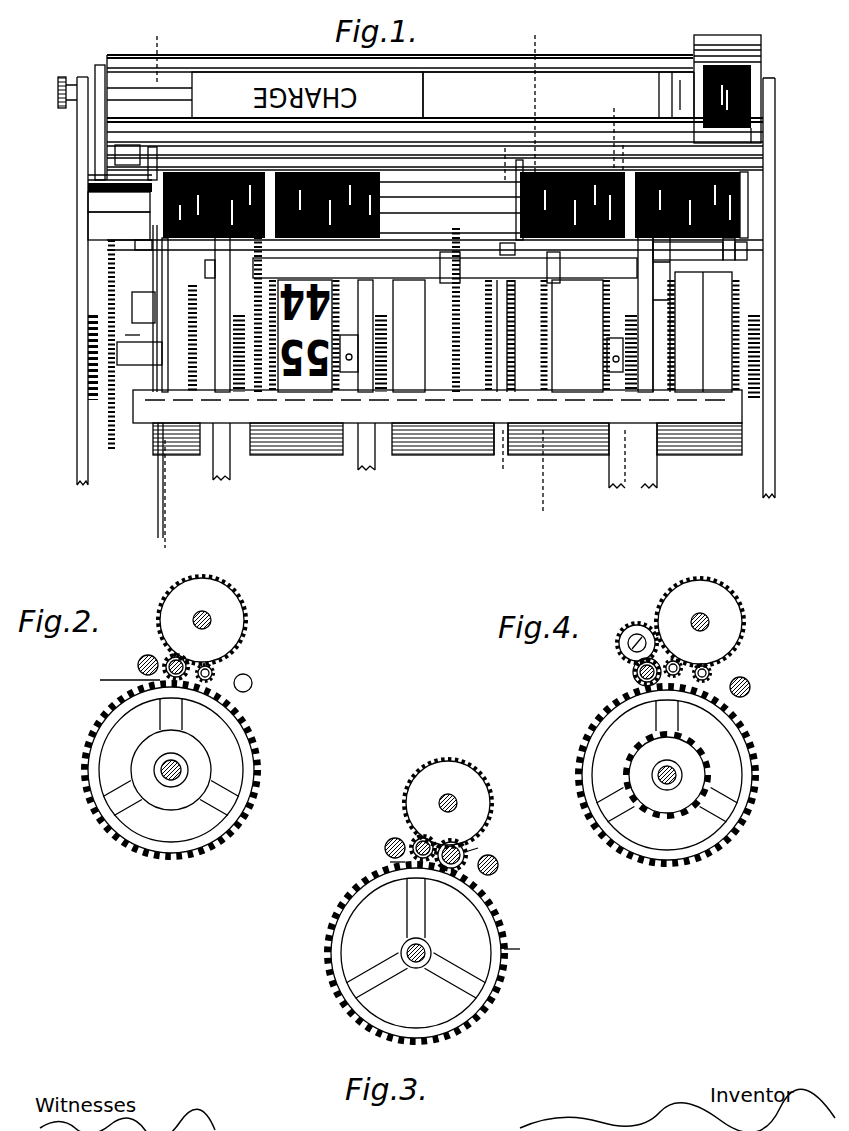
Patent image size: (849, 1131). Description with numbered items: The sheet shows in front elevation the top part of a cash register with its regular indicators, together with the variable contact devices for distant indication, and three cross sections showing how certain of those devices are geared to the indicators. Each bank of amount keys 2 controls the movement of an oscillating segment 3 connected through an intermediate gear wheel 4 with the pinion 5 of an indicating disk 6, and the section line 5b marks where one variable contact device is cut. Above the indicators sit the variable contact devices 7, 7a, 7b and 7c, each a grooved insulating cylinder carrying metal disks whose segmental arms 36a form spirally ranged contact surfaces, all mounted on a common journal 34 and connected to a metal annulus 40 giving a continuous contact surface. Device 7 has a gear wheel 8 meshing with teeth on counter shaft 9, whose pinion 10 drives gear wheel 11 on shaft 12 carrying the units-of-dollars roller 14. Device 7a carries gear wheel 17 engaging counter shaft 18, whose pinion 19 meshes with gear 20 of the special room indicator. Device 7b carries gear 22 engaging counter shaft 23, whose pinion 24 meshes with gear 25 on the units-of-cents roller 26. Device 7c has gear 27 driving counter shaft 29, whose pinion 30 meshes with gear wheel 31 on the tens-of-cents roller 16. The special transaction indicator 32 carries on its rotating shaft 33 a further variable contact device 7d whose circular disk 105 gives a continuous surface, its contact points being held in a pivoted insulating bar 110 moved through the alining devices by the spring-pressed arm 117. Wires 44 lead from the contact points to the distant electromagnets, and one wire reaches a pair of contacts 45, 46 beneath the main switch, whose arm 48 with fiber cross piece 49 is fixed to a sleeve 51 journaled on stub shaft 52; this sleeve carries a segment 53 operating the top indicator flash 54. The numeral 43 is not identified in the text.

In FIG. 1, the amount keys 2 is at (155, 150).
In FIG. 1, the oscillating segment 3 is at (500, 316).
In FIG. 1, the intermediate gear wheel 4 is at (621, 315).
In FIG. 1, the pinion 5 is at (537, 276).
In FIG. 1, the section line 5b is at (623, 185).
In FIG. 1, the indicating disk 6 is at (157, 293).
In FIG. 1, the variable contact device 7 is at (225, 172).
In FIG. 1, the variable contact device 7a is at (381, 190).
In FIG. 1, the variable contact device 7b is at (565, 172).
In FIG. 1, the variable contact device 7c is at (690, 172).
In FIG. 1, the variable contact device 7d is at (727, 65).
In FIG. 1, the gear wheel 8 is at (128, 202).
In FIG. 2, the gear wheel 8 is at (202, 620).
In FIG. 1, the counter shaft 9 is at (142, 244).
In FIG. 2, the counter shaft 9 is at (170, 660).
In FIG. 4, the counter shaft 9 is at (672, 658).
In FIG. 1, the pinion 10 is at (192, 250).
In FIG. 2, the pinion 10 is at (215, 672).
In FIG. 4, the pinion 10 is at (714, 676).
In FIG. 1, the gear wheel 11 is at (197, 285).
In FIG. 1, the shaft 12 is at (165, 352).
In FIG. 2, the shaft 12 is at (171, 780).
In FIG. 3, the shaft 12 is at (416, 964).
In FIG. 4, the shaft 12 is at (667, 786).
In FIG. 1, the units-of-dollars indicating roller 14 is at (593, 386).
In FIG. 3, the tens-of-cents front indication roller 16 is at (468, 870).
In FIG. 1, the gear wheel 17 is at (283, 243).
In FIG. 1, the counter shaft 18 is at (95, 256).
In FIG. 1, the pinion 19 is at (508, 250).
In FIG. 3, the pinion 19 is at (466, 852).
In FIG. 1, the gear 20 is at (518, 386).
In FIG. 3, the gear 20 is at (350, 910).
In FIG. 4, the gear 20 is at (637, 625).
In FIG. 1, the gear 22 is at (516, 205).
In FIG. 3, the gear 22 is at (461, 770).
In FIG. 1, the counter shaft 23 is at (580, 247).
In FIG. 3, the counter shaft 23 is at (415, 843).
In FIG. 1, the pinion 24 is at (742, 252).
In FIG. 3, the pinion 24 is at (395, 862).
In FIG. 1, the gear 25 is at (746, 302).
In FIG. 1, the units-of-cents front roller 26 is at (720, 386).
In FIG. 4, the gear 27 is at (706, 582).
In FIG. 2, the counter shaft 29 is at (140, 665).
In FIG. 3, the counter shaft 29 is at (386, 846).
In FIG. 4, the counter shaft 29 is at (637, 675).
In FIG. 1, the pinion 30 is at (688, 251).
In FIG. 4, the pinion 30 is at (640, 683).
In FIG. 1, the gear wheel 31 is at (670, 386).
In FIG. 1, the special transaction indicator 32 is at (472, 106).
In FIG. 1, the rotating shaft 33 is at (136, 94).
In FIG. 1, the journal 34 is at (456, 197).
In FIG. 2, the journal 34 is at (203, 629).
In FIG. 3, the journal 34 is at (448, 813).
In FIG. 4, the journal 34 is at (745, 772).
In FIG. 1, the segmental arm 36a is at (210, 172).
In FIG. 1, the metal annulus 40 is at (380, 211).
In FIG. 2, the metal annulus 40 is at (162, 679).
In FIG. 1, the indicator wheel 43 is at (400, 253).
In FIG. 2, the wires 44 is at (83, 762).
In FIG. 1, the contact 45 is at (545, 318).
In FIG. 3, the contact 45 is at (506, 947).
In FIG. 1, the contact 46 is at (694, 388).
In FIG. 4, the contact 46 is at (585, 736).
In FIG. 1, the arm 48 is at (128, 145).
In FIG. 4, the fiber cross piece 49 is at (508, 831).
In FIG. 1, the sleeve 51 is at (100, 172).
In FIG. 1, the stub shaft 52 is at (90, 162).
In FIG. 1, the segment 53 is at (100, 140).
In FIG. 1, the top indicator flash 54 is at (258, 55).
In FIG. 1, the circular disk 105 is at (748, 92).
In FIG. 1, the bar of insulation 110 is at (740, 206).
In FIG. 1, the arm 117 is at (60, 80).